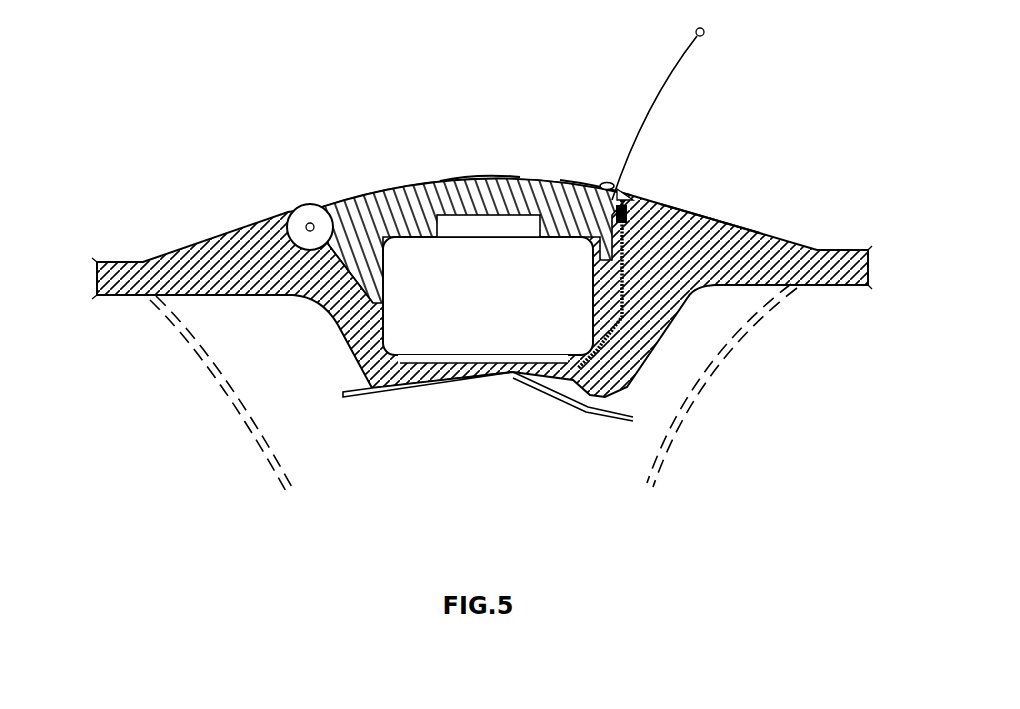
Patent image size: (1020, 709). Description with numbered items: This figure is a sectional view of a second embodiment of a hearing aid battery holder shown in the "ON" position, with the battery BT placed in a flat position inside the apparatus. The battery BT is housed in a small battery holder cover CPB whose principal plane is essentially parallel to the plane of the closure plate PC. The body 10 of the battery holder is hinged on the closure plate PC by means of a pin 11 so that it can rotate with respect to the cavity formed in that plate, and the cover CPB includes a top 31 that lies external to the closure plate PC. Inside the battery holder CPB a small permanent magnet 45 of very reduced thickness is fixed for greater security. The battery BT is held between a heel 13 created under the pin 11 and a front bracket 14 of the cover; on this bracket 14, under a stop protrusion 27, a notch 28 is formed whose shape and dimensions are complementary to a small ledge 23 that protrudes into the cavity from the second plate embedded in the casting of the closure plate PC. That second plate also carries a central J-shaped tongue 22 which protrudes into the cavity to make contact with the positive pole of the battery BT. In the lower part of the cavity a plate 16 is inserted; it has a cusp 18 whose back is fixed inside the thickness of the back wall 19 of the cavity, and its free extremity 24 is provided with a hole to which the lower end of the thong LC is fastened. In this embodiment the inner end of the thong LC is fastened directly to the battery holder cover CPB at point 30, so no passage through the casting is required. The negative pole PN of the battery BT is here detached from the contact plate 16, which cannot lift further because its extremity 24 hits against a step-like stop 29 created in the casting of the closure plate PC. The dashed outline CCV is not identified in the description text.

The closure plate PC is at (200, 237).
The body of the battery holder 10 is at (353, 197).
The pin 11 is at (305, 210).
The heel 13 is at (347, 268).
The battery BT is at (438, 270).
The permanent magnet 45 is at (458, 227).
The battery holder cover CPB is at (462, 118).
The top 31 is at (493, 180).
The front bracket 14 is at (602, 185).
The fastening point of thong 30 is at (610, 188).
The thong LC is at (662, 78).
The notch 28 is at (633, 197).
The stop protrusion 27 is at (643, 195).
The ledge 23 is at (690, 212).
The J-shaped tongue 22 is at (623, 330).
The center pillar cover CCV is at (703, 398).
The free extremity of plate 24 is at (636, 412).
The step-like stop 29 is at (590, 395).
The cusp 18 is at (510, 375).
The negative pole PN is at (467, 377).
The plate 16 is at (400, 392).
The back wall 19 is at (345, 393).